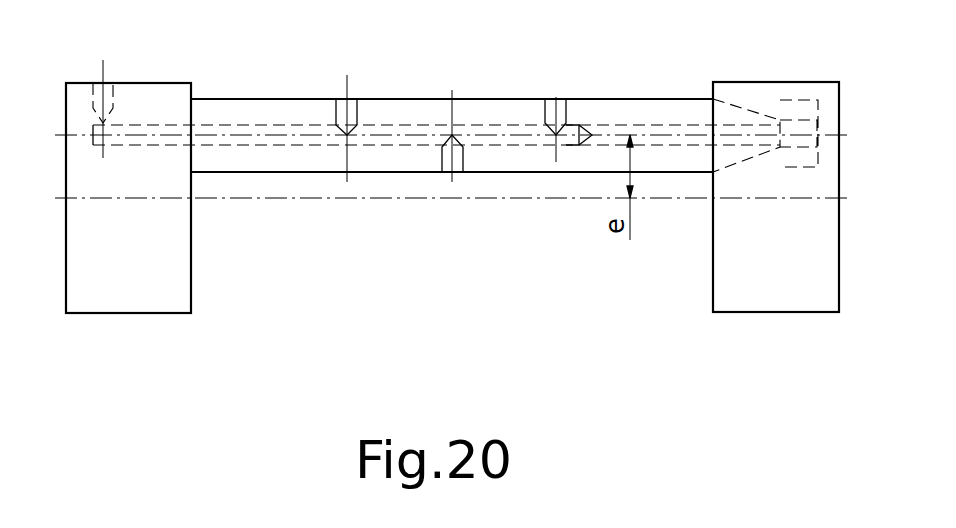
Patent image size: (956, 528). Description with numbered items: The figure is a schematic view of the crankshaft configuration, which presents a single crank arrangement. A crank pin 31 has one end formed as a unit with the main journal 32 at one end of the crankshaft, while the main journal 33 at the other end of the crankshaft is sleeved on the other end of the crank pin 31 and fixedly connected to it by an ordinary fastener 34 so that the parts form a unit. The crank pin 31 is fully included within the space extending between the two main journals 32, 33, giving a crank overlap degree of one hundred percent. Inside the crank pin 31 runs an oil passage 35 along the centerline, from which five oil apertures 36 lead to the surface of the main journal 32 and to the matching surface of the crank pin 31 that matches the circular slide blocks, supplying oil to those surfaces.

The crank pin 31 is at (623, 110).
The main journal 32 is at (163, 95).
The main journal 33 is at (742, 92).
The fastener 34 is at (812, 105).
The oil passage 35 is at (503, 127).
The oil apertures 36 is at (95, 90).